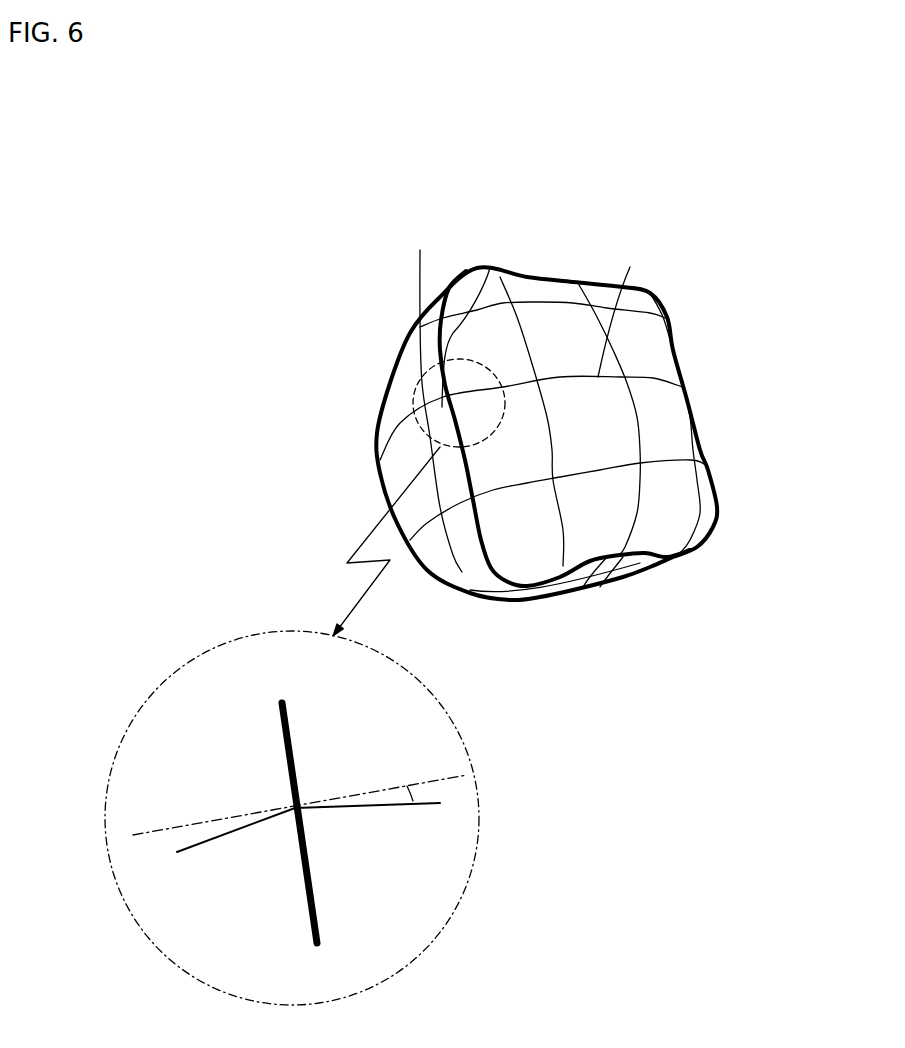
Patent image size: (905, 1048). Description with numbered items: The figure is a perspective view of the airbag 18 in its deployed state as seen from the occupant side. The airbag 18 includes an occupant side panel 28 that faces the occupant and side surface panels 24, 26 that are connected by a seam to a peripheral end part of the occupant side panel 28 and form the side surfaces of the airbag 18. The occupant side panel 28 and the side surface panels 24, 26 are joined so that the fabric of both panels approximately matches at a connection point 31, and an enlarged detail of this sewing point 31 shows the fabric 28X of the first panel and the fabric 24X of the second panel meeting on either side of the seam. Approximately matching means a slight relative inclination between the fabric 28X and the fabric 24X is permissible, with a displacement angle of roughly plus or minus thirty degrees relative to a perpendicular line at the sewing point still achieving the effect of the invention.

The airbag 18 is at (349, 237).
The side surface panel 24 is at (390, 358).
The side surface panel 26 is at (546, 433).
The occupant side panel 28 is at (680, 423).
The connection point 31 is at (490, 268).
The fabric of second panel 24X is at (227, 900).
The fabric of first panel 28X is at (398, 865).